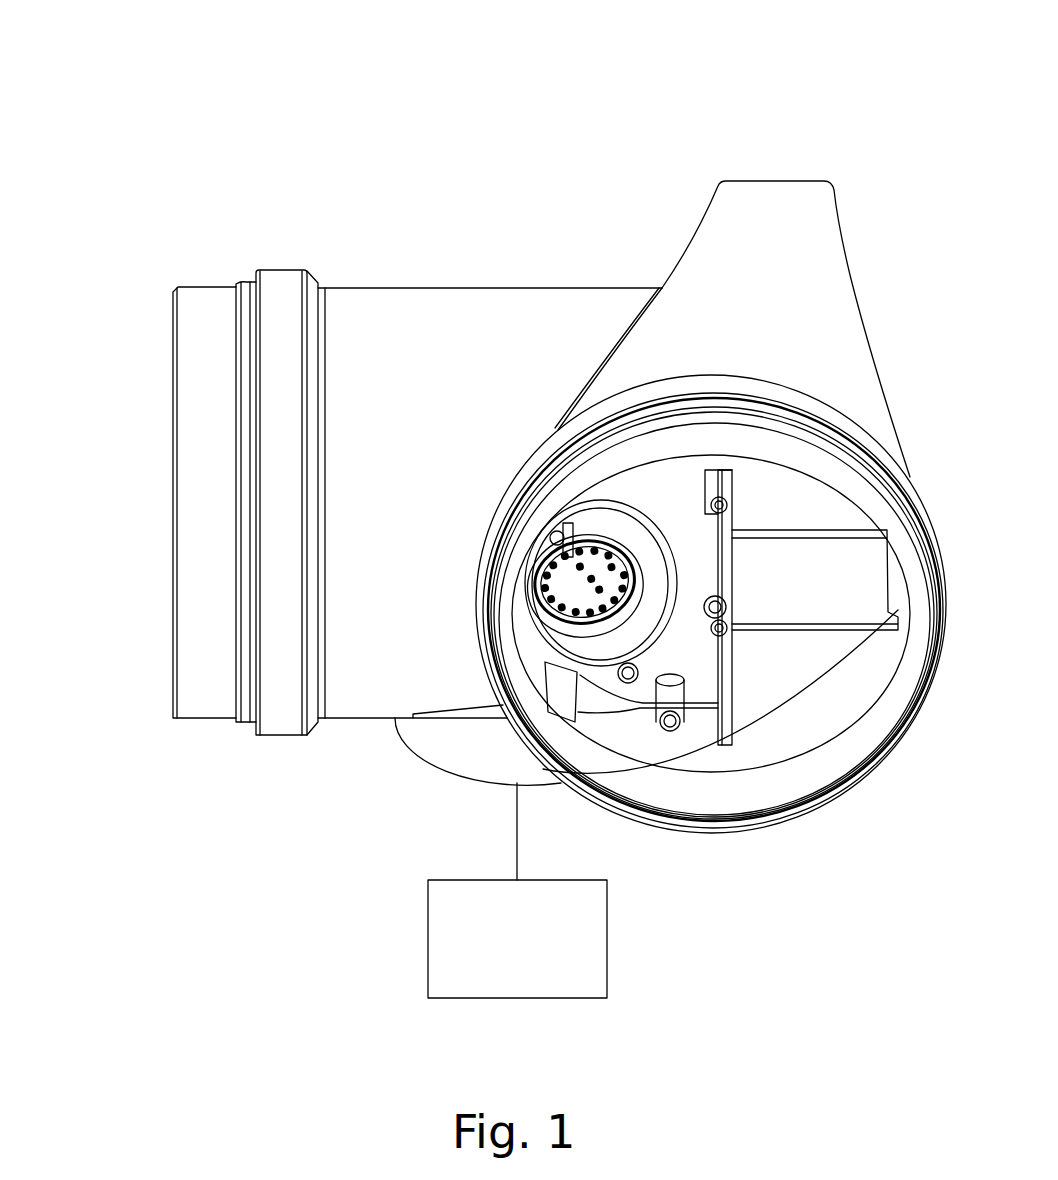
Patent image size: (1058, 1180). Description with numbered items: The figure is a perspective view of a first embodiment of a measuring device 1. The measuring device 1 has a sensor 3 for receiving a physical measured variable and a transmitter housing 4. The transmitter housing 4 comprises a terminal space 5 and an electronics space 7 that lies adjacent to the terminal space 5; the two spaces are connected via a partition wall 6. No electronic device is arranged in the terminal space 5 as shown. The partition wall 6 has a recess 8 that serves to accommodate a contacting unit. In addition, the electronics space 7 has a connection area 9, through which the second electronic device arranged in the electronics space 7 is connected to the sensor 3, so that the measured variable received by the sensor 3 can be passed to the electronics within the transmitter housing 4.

The measuring device 1 is at (283, 128).
The sensor 3 is at (607, 940).
The transmitter housing 4 is at (652, 240).
The terminal space 5 is at (803, 712).
The partition wall 6 is at (733, 568).
The electronics space 7 is at (123, 425).
The recess 8 is at (645, 625).
The connection area 9 is at (433, 797).